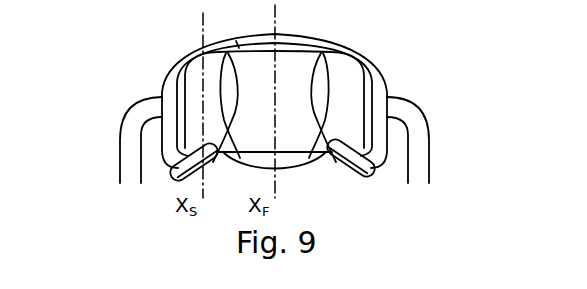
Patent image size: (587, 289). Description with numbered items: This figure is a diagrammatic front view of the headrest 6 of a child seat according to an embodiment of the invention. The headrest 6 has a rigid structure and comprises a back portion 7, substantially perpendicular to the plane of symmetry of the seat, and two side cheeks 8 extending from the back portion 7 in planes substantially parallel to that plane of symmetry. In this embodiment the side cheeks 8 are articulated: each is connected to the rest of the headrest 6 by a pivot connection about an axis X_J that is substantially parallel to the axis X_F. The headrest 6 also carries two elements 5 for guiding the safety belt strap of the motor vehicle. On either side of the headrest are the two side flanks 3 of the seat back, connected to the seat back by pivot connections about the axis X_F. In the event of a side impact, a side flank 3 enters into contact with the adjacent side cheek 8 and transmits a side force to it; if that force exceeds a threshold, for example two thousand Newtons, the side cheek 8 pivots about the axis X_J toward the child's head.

The side flank 3 is at (152, 175).
The element for guiding a safety belt strap 5 is at (376, 167).
The headrest 6 is at (390, 72).
The back portion 7 is at (309, 55).
The side cheek 8 is at (188, 92).